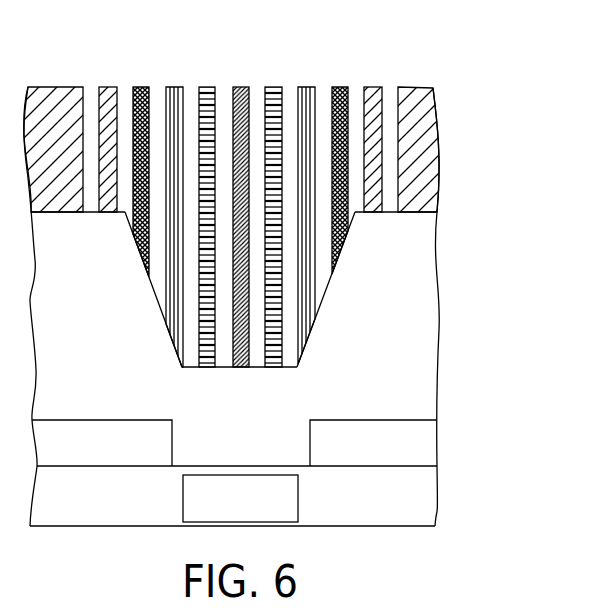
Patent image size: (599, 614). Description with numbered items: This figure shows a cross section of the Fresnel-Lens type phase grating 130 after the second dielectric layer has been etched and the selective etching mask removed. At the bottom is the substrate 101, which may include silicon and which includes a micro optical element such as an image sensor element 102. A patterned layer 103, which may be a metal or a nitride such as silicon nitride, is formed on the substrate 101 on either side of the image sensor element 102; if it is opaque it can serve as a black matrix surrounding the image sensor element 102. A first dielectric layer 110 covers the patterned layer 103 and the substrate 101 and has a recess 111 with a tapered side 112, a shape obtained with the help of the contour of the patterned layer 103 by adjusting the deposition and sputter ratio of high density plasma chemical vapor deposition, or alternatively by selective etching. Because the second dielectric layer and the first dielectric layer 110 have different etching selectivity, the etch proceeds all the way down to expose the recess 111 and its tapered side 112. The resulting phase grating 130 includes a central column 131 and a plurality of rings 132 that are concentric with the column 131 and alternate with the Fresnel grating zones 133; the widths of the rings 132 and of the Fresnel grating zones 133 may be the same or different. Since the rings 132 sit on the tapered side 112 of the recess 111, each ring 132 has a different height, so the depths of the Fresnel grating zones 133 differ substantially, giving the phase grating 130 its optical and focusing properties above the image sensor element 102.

The substrate 101 is at (392, 507).
The image sensor element 102 is at (257, 507).
The patterned layer 103 is at (125, 456).
The first dielectric layer 110 is at (392, 399).
The recess 111 is at (240, 380).
The tapered side 112 is at (136, 290).
The phase grating 130 is at (466, 99).
The column 131 is at (243, 87).
The rings 132 is at (140, 87).
The Fresnel grating zones 133 is at (291, 80).